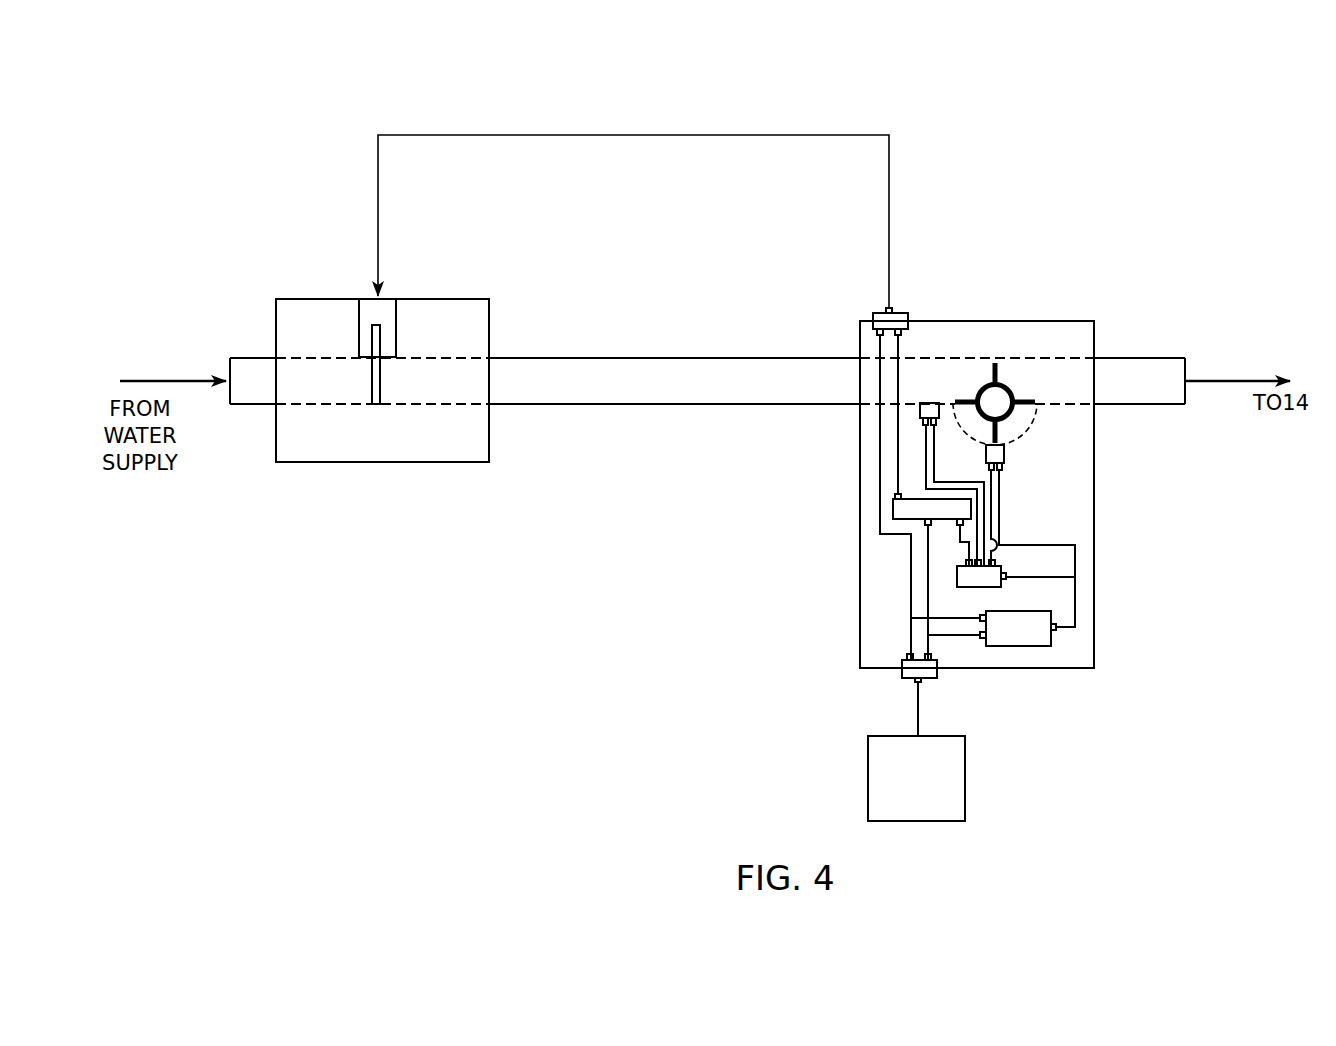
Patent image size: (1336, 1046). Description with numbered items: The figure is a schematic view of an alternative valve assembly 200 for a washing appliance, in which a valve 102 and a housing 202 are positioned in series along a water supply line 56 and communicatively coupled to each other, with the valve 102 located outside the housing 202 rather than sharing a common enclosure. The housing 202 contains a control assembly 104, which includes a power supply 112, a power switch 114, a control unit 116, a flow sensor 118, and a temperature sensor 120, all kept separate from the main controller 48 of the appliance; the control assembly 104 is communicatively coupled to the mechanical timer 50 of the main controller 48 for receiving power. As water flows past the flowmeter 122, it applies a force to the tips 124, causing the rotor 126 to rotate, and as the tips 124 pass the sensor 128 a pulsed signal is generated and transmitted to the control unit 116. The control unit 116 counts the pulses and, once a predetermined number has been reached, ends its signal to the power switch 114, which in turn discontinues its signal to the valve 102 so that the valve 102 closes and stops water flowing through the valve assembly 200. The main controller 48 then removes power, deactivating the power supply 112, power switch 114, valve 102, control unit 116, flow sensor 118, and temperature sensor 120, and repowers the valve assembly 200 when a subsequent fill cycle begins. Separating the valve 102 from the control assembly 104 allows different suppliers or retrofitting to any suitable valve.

The valve assembly 200 is at (1078, 83).
The water supply line 56 is at (252, 358).
The valve 102 is at (397, 320).
The control assembly 104 is at (1052, 308).
The housing 202 is at (980, 321).
The rotor 126 is at (1000, 400).
The tips 124 is at (1033, 404).
The flowmeter 122 is at (1040, 422).
The flow sensor 118 is at (1033, 443).
The temperature sensor 120 is at (920, 410).
The sensor 128 is at (1005, 456).
The power switch 114 is at (906, 519).
The control unit 116 is at (968, 587).
The power supply 112 is at (1030, 646).
The mechanical timer 50 is at (922, 793).
The main controller 48 is at (975, 782).